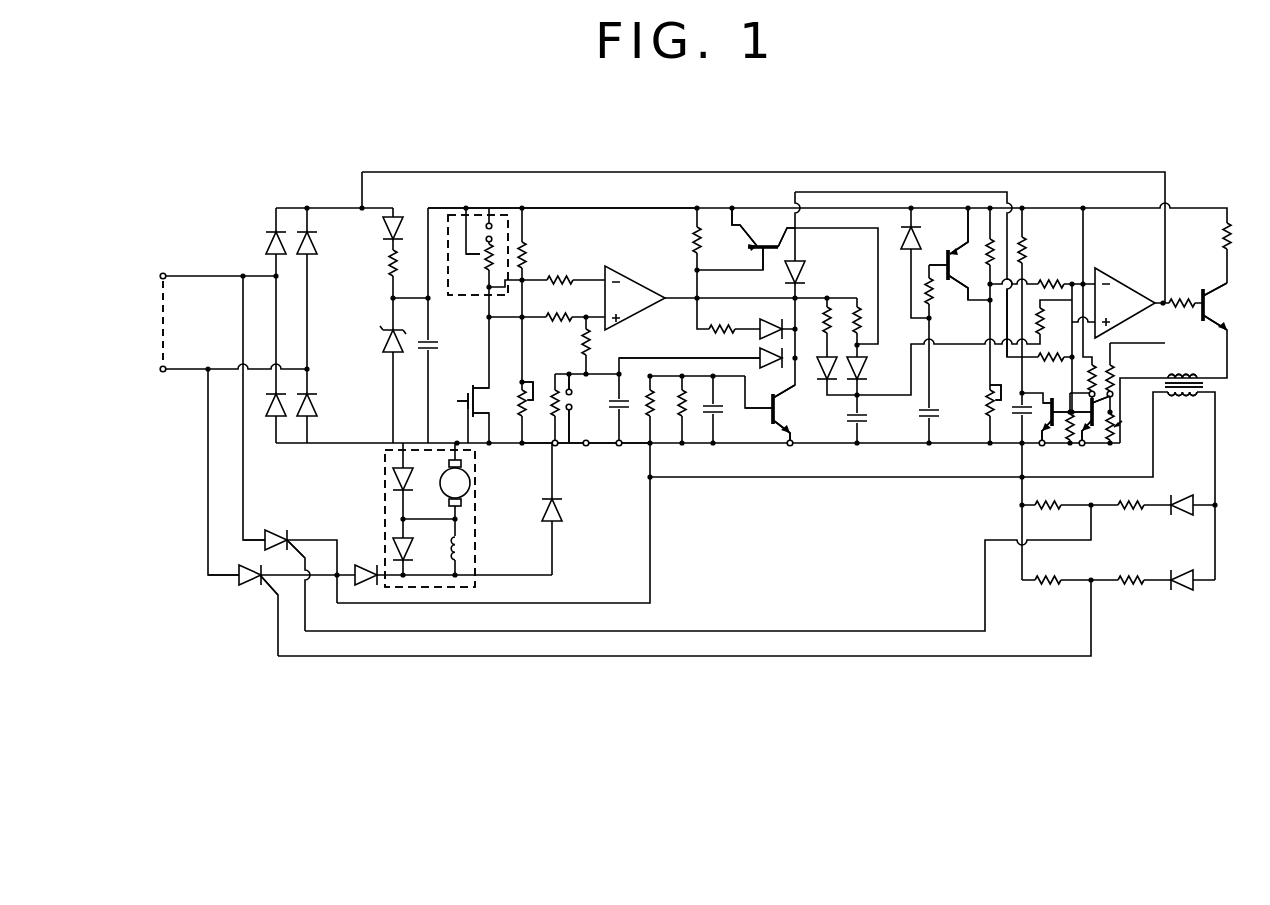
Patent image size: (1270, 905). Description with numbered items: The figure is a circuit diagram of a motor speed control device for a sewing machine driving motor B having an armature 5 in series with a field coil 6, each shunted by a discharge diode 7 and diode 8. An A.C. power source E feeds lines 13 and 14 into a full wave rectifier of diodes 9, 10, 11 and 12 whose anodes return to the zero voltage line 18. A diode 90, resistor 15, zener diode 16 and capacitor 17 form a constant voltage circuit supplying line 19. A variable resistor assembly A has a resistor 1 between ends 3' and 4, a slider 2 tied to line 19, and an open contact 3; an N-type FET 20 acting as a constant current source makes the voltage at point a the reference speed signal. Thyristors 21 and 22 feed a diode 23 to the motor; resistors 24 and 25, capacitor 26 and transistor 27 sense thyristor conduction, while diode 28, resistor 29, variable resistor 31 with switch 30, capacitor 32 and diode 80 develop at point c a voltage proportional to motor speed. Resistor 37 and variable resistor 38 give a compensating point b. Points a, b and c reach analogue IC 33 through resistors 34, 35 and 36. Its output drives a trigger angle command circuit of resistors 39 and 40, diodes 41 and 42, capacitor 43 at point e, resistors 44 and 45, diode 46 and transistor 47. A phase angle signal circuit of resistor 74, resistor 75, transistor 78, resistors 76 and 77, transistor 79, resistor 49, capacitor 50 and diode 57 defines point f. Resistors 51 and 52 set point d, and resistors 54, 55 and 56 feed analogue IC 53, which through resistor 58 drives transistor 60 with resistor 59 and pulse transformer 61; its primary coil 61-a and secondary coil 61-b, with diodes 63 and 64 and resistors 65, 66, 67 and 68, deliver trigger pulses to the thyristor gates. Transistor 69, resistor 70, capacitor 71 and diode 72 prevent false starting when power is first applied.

The resistor 1 is at (483, 256).
The slider 2 is at (480, 255).
The open contact 3 is at (483, 205).
The end of resistor 3' is at (503, 210).
The end of resistor 4 is at (488, 289).
The armature 5 is at (470, 483).
The field coil 6 is at (464, 546).
The diode 7 is at (412, 473).
The diode 8 is at (412, 545).
The diode 9 is at (278, 256).
The diode 10 is at (310, 256).
The diode 11 is at (312, 416).
The diode 12 is at (272, 418).
The line 13 is at (192, 276).
The line 14 is at (180, 378).
The resistor 15 is at (397, 263).
The zener diode 16 is at (382, 352).
The capacitor 17 is at (425, 352).
The reference or zero voltage line 18 is at (595, 443).
The line 19 is at (572, 208).
The N-type FET 20 is at (480, 395).
The thyristor 21 is at (277, 530).
The thyristor 22 is at (255, 587).
The diode 23 is at (364, 564).
The resistor 24 is at (659, 416).
The resistor 25 is at (691, 416).
The capacitor 26 is at (721, 423).
The NPN type transistor 27 is at (784, 410).
The diode 28 is at (562, 515).
The resistor 29 is at (551, 410).
The switch 30 is at (570, 423).
The variable resistor 31 is at (575, 404).
The capacitor 32 is at (609, 420).
The current input type analogue IC 33 is at (653, 288).
The resistor 34 is at (570, 278).
The resistor 35 is at (555, 315).
The resistor 36 is at (580, 343).
The resistor 37 is at (527, 258).
The variable resistor 38 is at (518, 410).
The resistor 39 is at (838, 320).
The resistor 40 is at (859, 308).
The diode 41 is at (834, 355).
The diode 42 is at (865, 368).
The capacitor 43 is at (865, 419).
The resistor 44 is at (691, 244).
The resistor 45 is at (708, 336).
The diode 46 is at (762, 330).
The PNP type transistor 47 is at (754, 227).
The resistor 49 is at (1026, 253).
The capacitor 50 is at (1018, 412).
The resistor 51 is at (955, 268).
The resistor 52 is at (984, 410).
The current input type analogue IC 53 is at (1135, 281).
The resistor 54 is at (1056, 271).
The resistor 55 is at (1053, 318).
The resistor 56 is at (1054, 346).
The diode 57 is at (804, 268).
The resistor 58 is at (1176, 296).
The resistor 59 is at (1233, 238).
The NPN type transistor 60 is at (1232, 302).
The pulse transformer 61 is at (1182, 357).
The primary coil 61-a is at (1187, 377).
The secondary coil 61-b is at (1173, 397).
The diode 63 is at (1182, 512).
The diode 64 is at (1181, 591).
The resistor 65 is at (1123, 501).
The resistor 66 is at (1133, 586).
The resistor 67 is at (1045, 501).
The resistor 68 is at (1050, 586).
The PNP type transistor 69 is at (952, 253).
The resistor 70 is at (931, 295).
The capacitor 71 is at (932, 411).
The diode 72 is at (898, 233).
The resistor 74 is at (1112, 375).
The resistor 75 is at (1122, 421).
The resistor 76 is at (1086, 375).
The resistor 77 is at (1068, 443).
The NPN type transistor 78 is at (1097, 443).
The NPN type transistor 79 is at (1034, 443).
The diode 80 is at (772, 369).
The diode 90 is at (397, 216).
The variable resistor assembly A is at (450, 297).
The sewing machine driving motor B is at (385, 486).
The A.C. power source E is at (163, 333).
The point a is at (489, 318).
The point b is at (522, 318).
The point c is at (592, 363).
The point d is at (989, 302).
The point e is at (864, 404).
The point f is at (1015, 360).